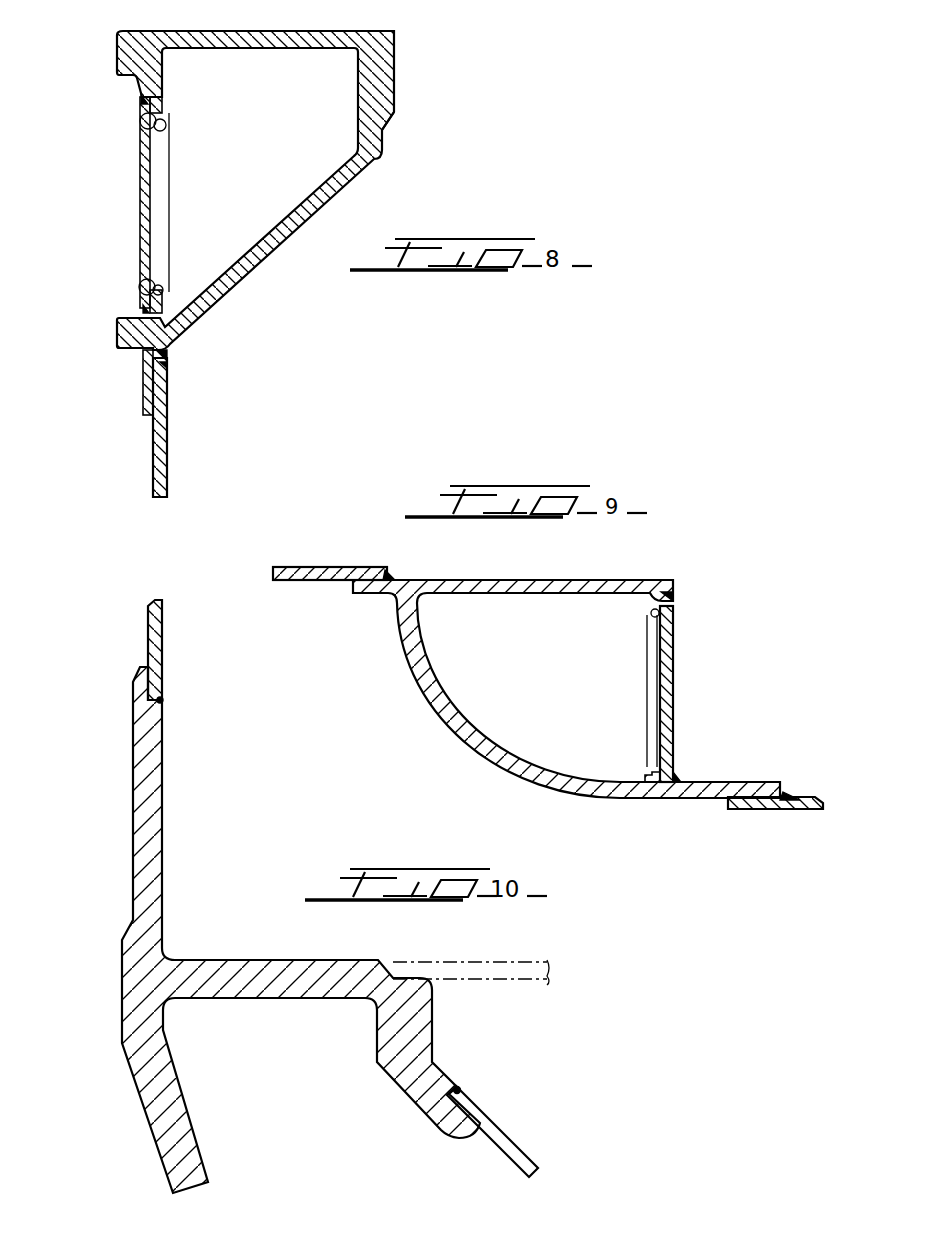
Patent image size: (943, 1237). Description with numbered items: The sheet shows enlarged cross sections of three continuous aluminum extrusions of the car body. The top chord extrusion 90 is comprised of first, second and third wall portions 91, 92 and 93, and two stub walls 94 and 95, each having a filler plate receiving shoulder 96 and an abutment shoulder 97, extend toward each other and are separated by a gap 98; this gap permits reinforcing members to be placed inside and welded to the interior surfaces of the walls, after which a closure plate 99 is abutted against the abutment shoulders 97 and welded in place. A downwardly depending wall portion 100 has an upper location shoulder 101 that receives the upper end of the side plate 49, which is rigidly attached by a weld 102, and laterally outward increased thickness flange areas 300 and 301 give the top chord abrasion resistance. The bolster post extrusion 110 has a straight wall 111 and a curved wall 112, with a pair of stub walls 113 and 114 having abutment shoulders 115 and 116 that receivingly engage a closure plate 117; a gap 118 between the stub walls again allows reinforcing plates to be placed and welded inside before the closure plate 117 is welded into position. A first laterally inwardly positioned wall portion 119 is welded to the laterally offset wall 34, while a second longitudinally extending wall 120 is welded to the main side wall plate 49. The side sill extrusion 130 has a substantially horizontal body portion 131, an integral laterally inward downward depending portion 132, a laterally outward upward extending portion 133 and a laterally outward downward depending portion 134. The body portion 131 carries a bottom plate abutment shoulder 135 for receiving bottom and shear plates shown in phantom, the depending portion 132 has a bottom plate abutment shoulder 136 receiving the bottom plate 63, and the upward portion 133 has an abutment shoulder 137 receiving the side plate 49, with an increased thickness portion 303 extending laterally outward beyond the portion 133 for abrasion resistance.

In FIG. 8, the extrusion 90 is at (408, 96).
In FIG. 8, the increased thickness flange area 300 is at (117, 52).
In FIG. 8, the third wall portion 93 is at (276, 40).
In FIG. 8, the second wall portion 92 is at (395, 112).
In FIG. 8, the first wall portion 91 is at (282, 250).
In FIG. 8, the increased thickness flange area 301 is at (117, 334).
In FIG. 8, the stub wall 94 is at (141, 98).
In FIG. 8, the filler plate receiving shoulder 96 is at (164, 105).
In FIG. 8, the abutment shoulder 97 is at (166, 126).
In FIG. 8, the gap 98 is at (180, 175).
In FIG. 8, the closure plate 99 is at (140, 202).
In FIG. 8, the stub wall 95 is at (118, 324).
In FIG. 8, the upper location shoulder 101 is at (166, 356).
In FIG. 8, the weld 102 is at (167, 364).
In FIG. 8, the downwardly depending wall portion 100 is at (143, 398).
In FIG. 8, the side plate 49 is at (167, 468).
In FIG. 9, the side plate 49 is at (773, 808).
In FIG. 10, the side plate 49 is at (163, 631).
In FIG. 9, the extrusion 110 is at (532, 572).
In FIG. 9, the straight wall 111 is at (612, 582).
In FIG. 9, the curved wall 112 is at (490, 754).
In FIG. 9, the offset wall 34 is at (302, 567).
In FIG. 9, the first laterally inwardly positioned longitudinally extending wall portion 119 is at (391, 574).
In FIG. 9, the stub wall 113 is at (657, 600).
In FIG. 9, the abutment shoulder 115 is at (652, 616).
In FIG. 9, the closure plate 117 is at (668, 692).
In FIG. 9, the gap 118 is at (642, 680).
In FIG. 9, the abutment shoulder 116 is at (660, 772).
In FIG. 9, the stub wall 114 is at (645, 778).
In FIG. 9, the second longitudinally extending wall 120 is at (720, 786).
In FIG. 10, the extrusion 130 is at (263, 930).
In FIG. 10, the laterally outward upward extending portion 133 is at (150, 822).
In FIG. 10, the substantially horizontal body portion 131 is at (302, 963).
In FIG. 10, the laterally inward downward depending portion 132 is at (410, 1050).
In FIG. 10, the laterally outward downward depending portion 134 is at (180, 1110).
In FIG. 10, the increased thickness portion 303 is at (122, 999).
In FIG. 10, the abutment shoulder 137 is at (140, 670).
In FIG. 10, the bottom plate abutment shoulder 135 is at (418, 978).
In FIG. 10, the bottom plate abutment shoulder 136 is at (468, 1103).
In FIG. 10, the plate 63 is at (514, 1160).